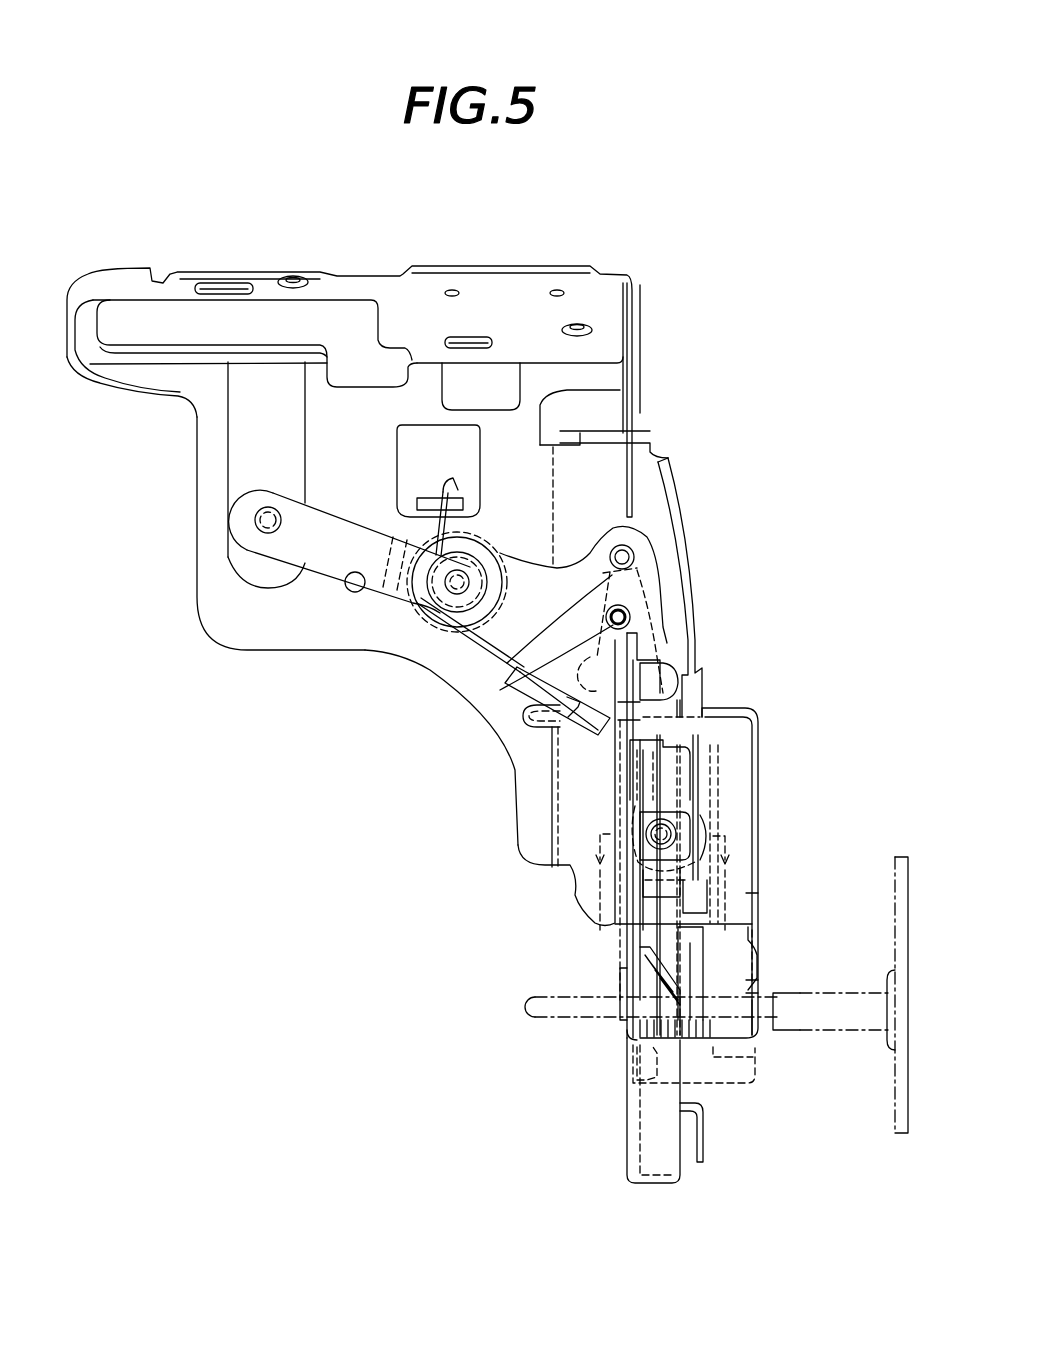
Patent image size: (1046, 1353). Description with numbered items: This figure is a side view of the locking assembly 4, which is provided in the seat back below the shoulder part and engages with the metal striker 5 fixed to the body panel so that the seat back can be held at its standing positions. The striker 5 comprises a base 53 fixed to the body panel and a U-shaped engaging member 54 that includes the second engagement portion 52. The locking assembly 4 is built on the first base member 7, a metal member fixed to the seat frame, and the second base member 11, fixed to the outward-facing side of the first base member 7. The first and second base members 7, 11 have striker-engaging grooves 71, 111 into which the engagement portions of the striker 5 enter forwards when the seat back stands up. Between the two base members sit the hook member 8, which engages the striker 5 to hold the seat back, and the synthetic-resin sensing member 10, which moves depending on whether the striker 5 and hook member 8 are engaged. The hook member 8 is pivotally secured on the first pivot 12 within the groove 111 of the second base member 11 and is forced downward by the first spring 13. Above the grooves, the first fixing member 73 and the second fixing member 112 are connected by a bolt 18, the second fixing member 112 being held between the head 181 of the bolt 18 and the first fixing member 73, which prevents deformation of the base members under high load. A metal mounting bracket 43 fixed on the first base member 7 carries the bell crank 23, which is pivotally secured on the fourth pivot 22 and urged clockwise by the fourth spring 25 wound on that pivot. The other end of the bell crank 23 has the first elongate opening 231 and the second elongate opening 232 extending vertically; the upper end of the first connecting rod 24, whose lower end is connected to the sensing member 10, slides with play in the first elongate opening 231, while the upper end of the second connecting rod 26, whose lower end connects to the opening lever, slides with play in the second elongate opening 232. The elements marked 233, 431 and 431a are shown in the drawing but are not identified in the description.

The locking assembly 4 is at (762, 607).
The striker 5 is at (900, 855).
The first base member 7 is at (630, 1083).
The hook member 8 is at (756, 945).
The sensing member 10 is at (700, 943).
The second base member 11 is at (760, 737).
The first pivot 12 is at (620, 980).
The first spring 13 is at (642, 968).
The bolt 18 is at (653, 823).
The head 181 is at (669, 838).
The fourth pivot 22 is at (437, 613).
The bell crank 23 is at (325, 565).
The first connecting rod 24 is at (653, 657).
The fourth spring 25 is at (477, 617).
The second connecting rod 26 is at (517, 765).
The mounting bracket 43 is at (683, 470).
The second engagement portion 52 is at (850, 1030).
The base 53 is at (903, 1135).
The engaging member 54 is at (530, 1007).
The striker-engaging groove 71 is at (628, 1030).
The first fixing member 73 is at (673, 793).
The striker-engaging groove 111 is at (762, 1020).
The second fixing member 112 is at (640, 860).
The first elongate opening 231 is at (560, 676).
The second elongate opening 232 is at (633, 563).
The pivot pin 233 is at (258, 520).
The mounting plate 431 is at (538, 265).
The mounting plate slot 431a is at (257, 345).